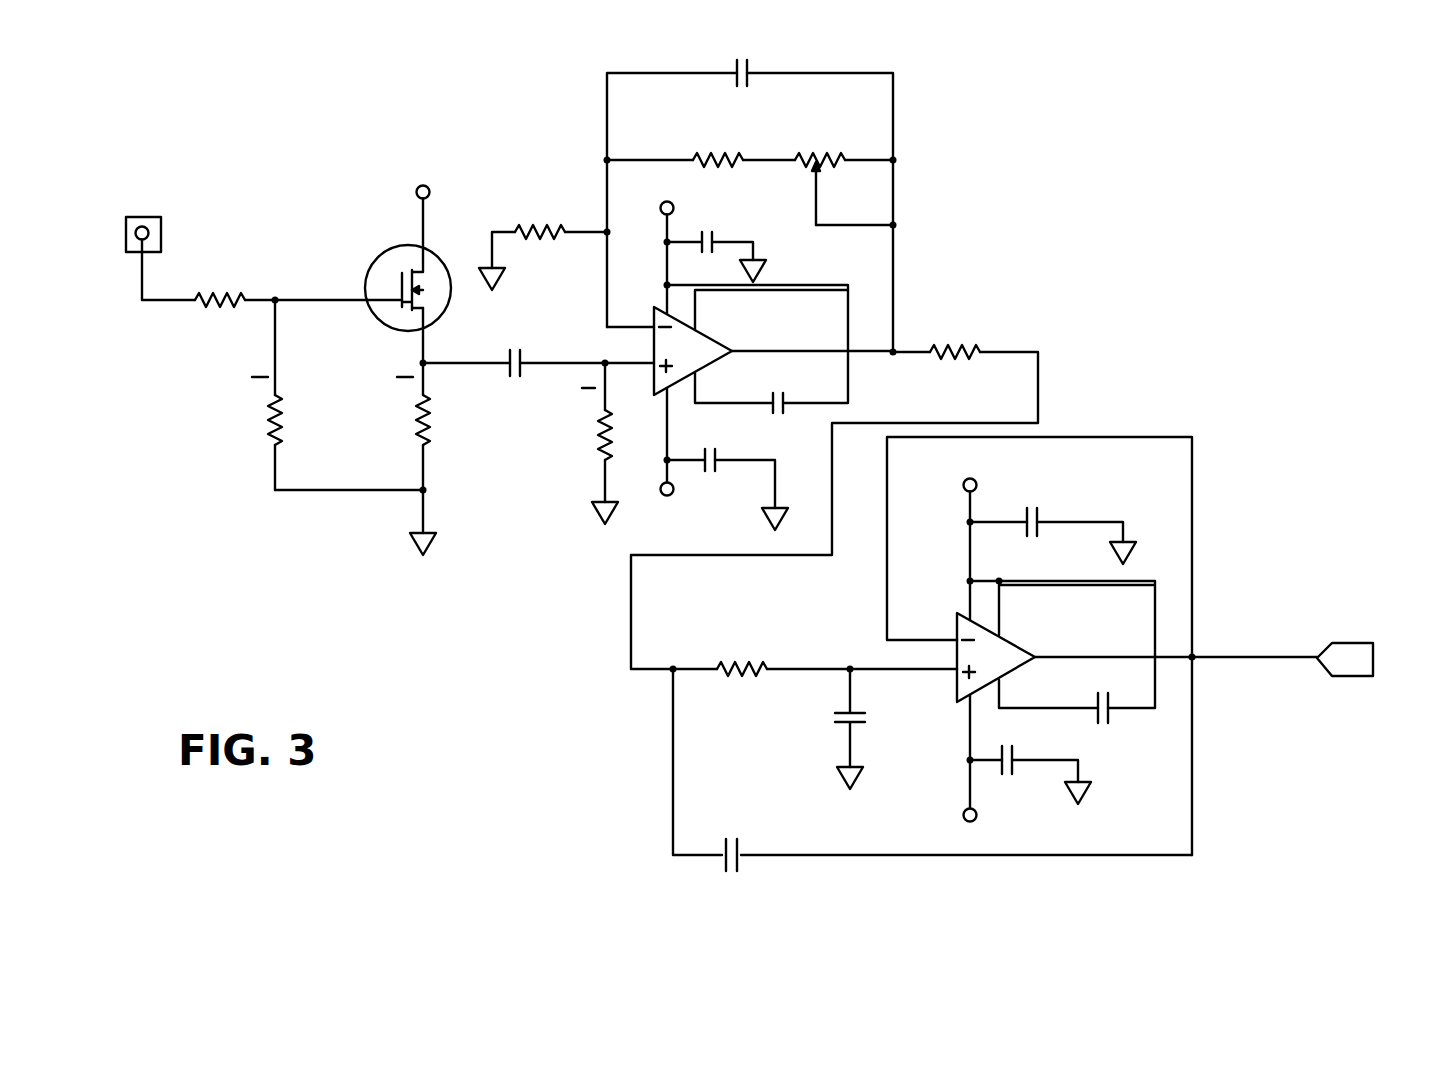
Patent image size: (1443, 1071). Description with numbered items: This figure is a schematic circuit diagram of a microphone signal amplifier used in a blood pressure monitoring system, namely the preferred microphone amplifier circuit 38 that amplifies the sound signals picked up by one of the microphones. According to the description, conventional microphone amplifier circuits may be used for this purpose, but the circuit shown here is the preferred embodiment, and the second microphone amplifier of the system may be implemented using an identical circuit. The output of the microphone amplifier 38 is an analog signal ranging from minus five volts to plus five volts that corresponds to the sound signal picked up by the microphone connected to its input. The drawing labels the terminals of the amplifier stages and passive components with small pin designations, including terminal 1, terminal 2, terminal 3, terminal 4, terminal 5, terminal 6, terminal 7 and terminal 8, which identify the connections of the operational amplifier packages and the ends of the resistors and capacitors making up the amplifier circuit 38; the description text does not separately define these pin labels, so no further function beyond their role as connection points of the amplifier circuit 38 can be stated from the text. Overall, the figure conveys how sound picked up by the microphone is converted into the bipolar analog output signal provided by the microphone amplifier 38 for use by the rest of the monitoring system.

The microphone amplifier 38 is at (1083, 177).
The microphone input jack MIC 1 is at (160, 258).
The resistor R16 pin 2 is at (266, 395).
The JFET transistor Q1 3 is at (399, 265).
The op amp U4 negative supply pin 4 is at (673, 440).
The op amp U4 pin 5 is at (757, 349).
The op amp U4 output pin 6 is at (773, 351).
The op amp U4 positive supply pin 7 is at (672, 260).
The op amp U5 pin 8 is at (1062, 652).